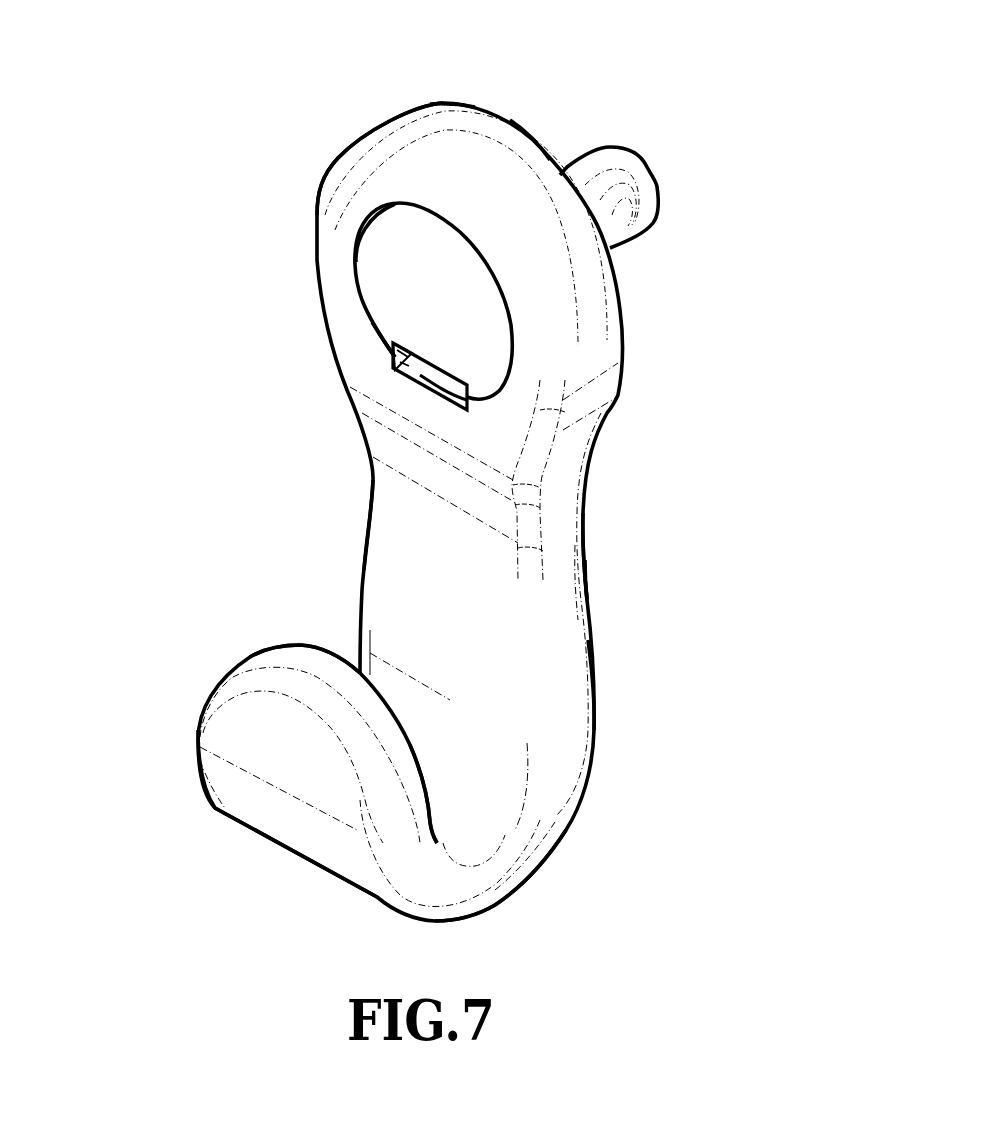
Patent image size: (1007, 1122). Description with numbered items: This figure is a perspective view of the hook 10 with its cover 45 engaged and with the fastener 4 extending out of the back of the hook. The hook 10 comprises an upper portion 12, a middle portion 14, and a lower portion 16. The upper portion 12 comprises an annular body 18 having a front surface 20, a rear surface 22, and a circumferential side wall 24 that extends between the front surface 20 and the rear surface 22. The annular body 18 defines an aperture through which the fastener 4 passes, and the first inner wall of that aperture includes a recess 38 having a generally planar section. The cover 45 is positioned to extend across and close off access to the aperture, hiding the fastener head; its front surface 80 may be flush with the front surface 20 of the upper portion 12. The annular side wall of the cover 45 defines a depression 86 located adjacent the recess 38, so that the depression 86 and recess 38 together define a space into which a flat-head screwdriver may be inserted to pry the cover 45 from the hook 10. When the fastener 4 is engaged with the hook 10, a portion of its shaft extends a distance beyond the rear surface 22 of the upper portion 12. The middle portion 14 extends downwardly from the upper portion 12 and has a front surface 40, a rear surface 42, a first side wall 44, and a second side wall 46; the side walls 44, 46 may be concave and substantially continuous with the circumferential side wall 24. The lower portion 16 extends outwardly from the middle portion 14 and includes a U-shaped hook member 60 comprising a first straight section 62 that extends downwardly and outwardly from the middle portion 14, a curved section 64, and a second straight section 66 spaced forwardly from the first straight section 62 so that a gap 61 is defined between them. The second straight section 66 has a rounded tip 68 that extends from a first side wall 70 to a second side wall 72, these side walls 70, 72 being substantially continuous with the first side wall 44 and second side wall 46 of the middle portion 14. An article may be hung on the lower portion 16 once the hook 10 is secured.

The hook 10 is at (632, 77).
The upper portion 12 is at (643, 287).
The middle portion 14 is at (607, 558).
The lower portion 16 is at (535, 887).
The annular body 18 is at (405, 123).
The front surface 20 is at (345, 302).
The rear surface 22 is at (533, 140).
The circumferential side wall 24 is at (463, 130).
The fastener 4 is at (632, 167).
The recess 38 is at (420, 372).
The front surface 40 is at (408, 540).
The rear surface 42 is at (588, 583).
The first side wall 44 is at (370, 500).
The cover 45 is at (383, 317).
The second side wall 46 is at (565, 617).
The hook member 60 is at (297, 850).
The gap 61 is at (478, 758).
The first straight section 62 is at (575, 682).
The curved section 64 is at (527, 845).
The second straight section 66 is at (278, 763).
The tip 68 is at (282, 658).
The first side wall 70 is at (198, 737).
The second side wall 72 is at (405, 830).
The front surface 80 is at (395, 238).
The depression 86 is at (453, 380).